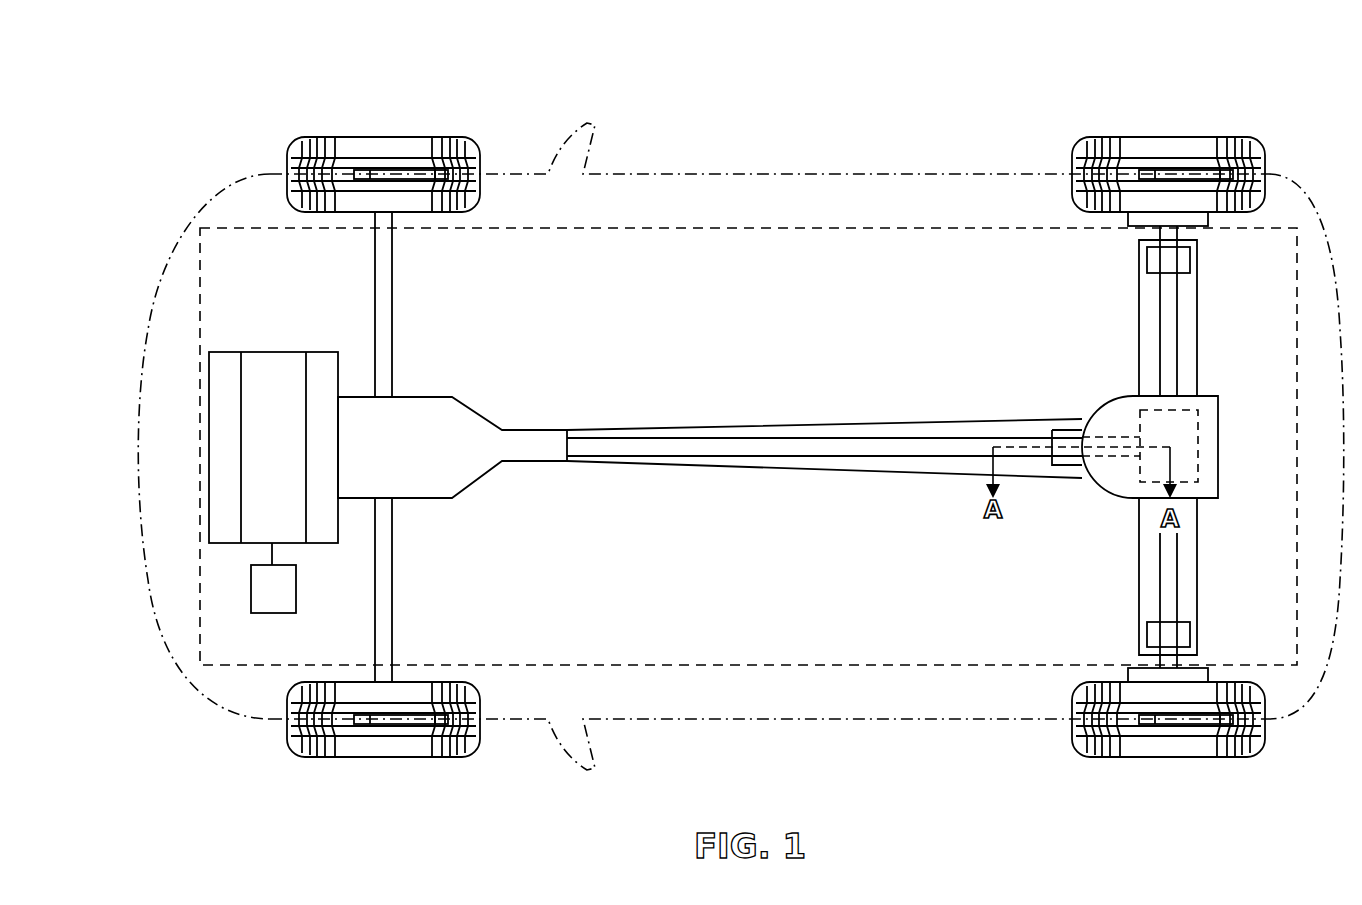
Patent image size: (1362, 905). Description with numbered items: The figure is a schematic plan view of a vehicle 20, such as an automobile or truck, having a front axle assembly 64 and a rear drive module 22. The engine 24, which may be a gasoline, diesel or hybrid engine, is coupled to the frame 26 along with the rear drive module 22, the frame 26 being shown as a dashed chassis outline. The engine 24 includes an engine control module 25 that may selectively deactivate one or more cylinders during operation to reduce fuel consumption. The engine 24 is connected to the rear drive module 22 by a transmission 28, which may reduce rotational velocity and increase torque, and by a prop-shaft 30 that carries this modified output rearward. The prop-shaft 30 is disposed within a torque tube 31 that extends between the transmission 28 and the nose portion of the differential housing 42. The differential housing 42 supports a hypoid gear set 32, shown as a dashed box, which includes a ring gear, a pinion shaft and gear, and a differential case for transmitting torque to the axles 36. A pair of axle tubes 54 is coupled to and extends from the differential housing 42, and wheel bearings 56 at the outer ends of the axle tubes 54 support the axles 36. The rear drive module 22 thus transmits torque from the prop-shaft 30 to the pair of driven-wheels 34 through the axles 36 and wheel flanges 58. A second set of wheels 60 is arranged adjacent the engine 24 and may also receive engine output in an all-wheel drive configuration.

The vehicle 20 is at (1262, 70).
The rear drive module 22 is at (1171, 447).
The engine 24 is at (209, 442).
The engine control module 25 is at (251, 585).
The frame 26 is at (748, 227).
The transmission 28 is at (480, 478).
The prop-shaft 30 is at (826, 437).
The torque tube 31 is at (740, 431).
The hypoid gear set 32 is at (1207, 442).
The driven-wheels 34 is at (1165, 134).
The axles 36 is at (1180, 335).
The differential housing 42 is at (1103, 402).
The axle tubes 54 is at (1139, 319).
The wheel bearings 56 is at (1147, 261).
The wheel flanges 58 is at (1128, 225).
The second set of wheels 60 is at (390, 134).
The front axle assembly 64 is at (711, 431).